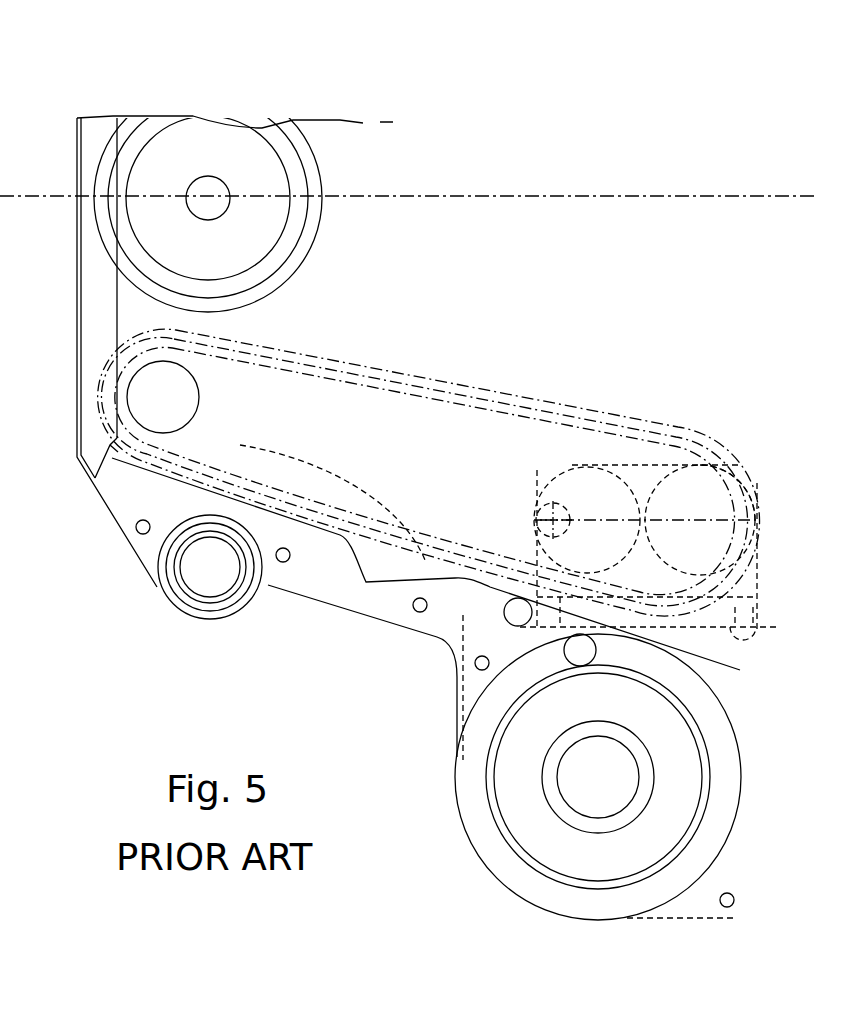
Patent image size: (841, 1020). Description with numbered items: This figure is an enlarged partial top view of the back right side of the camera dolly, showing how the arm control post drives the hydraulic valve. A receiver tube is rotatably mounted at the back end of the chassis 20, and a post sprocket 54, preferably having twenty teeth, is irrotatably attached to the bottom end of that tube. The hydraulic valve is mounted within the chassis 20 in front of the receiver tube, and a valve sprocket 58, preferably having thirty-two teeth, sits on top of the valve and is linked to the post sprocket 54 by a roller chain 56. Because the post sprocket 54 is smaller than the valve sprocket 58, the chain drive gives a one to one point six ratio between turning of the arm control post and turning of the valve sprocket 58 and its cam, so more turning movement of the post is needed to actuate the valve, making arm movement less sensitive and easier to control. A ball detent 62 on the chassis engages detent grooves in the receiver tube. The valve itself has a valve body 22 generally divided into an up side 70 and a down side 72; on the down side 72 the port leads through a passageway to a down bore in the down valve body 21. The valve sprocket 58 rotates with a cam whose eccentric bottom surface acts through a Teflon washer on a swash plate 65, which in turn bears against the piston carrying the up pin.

The chassis 20 is at (130, 546).
The down valve body 21 is at (537, 545).
The valve body 22 is at (707, 507).
The post sprocket 54 is at (215, 392).
The roller chain 56 is at (447, 383).
The valve sprocket 58 is at (600, 444).
The ball detent 62 is at (105, 470).
The swash plate 65 is at (650, 463).
The up side 70 is at (593, 480).
The down side 72 is at (733, 460).